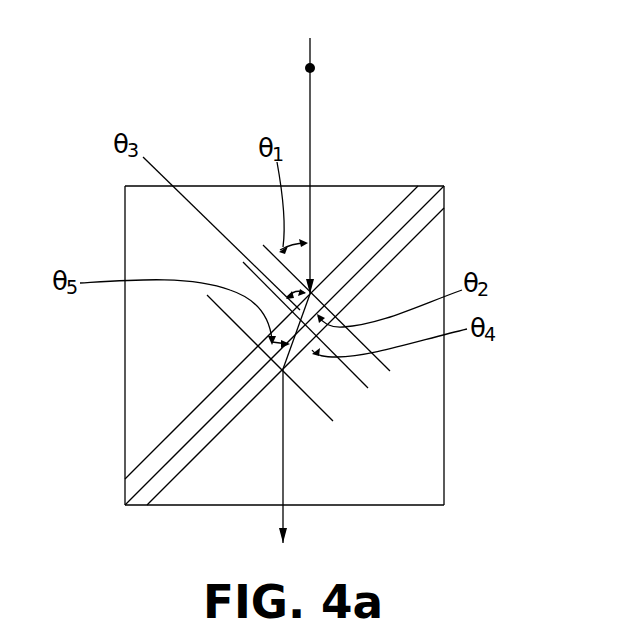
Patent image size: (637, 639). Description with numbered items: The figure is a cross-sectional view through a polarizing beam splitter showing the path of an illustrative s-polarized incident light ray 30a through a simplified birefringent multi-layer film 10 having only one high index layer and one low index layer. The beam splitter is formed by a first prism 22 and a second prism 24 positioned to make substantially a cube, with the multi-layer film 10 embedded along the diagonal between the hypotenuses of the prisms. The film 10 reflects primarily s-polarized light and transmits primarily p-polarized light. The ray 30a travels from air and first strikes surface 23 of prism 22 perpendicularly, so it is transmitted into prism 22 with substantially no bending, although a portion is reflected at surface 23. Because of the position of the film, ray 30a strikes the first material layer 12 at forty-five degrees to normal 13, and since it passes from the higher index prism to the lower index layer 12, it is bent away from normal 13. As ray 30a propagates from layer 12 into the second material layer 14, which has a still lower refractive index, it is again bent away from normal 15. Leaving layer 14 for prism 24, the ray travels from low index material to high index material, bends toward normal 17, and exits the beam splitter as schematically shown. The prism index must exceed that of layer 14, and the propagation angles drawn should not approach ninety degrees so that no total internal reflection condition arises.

The birefringent multi-layer film 10 is at (432, 170).
The first material layer 12 is at (428, 190).
The second material layer 14 is at (438, 203).
The normal 13 is at (384, 365).
The normal 15 is at (369, 387).
The normal 17 is at (302, 398).
The first prism 22 is at (135, 243).
The surface 23 is at (248, 186).
The second prism 24 is at (423, 477).
The s-polarized incident light ray 30a is at (308, 55).